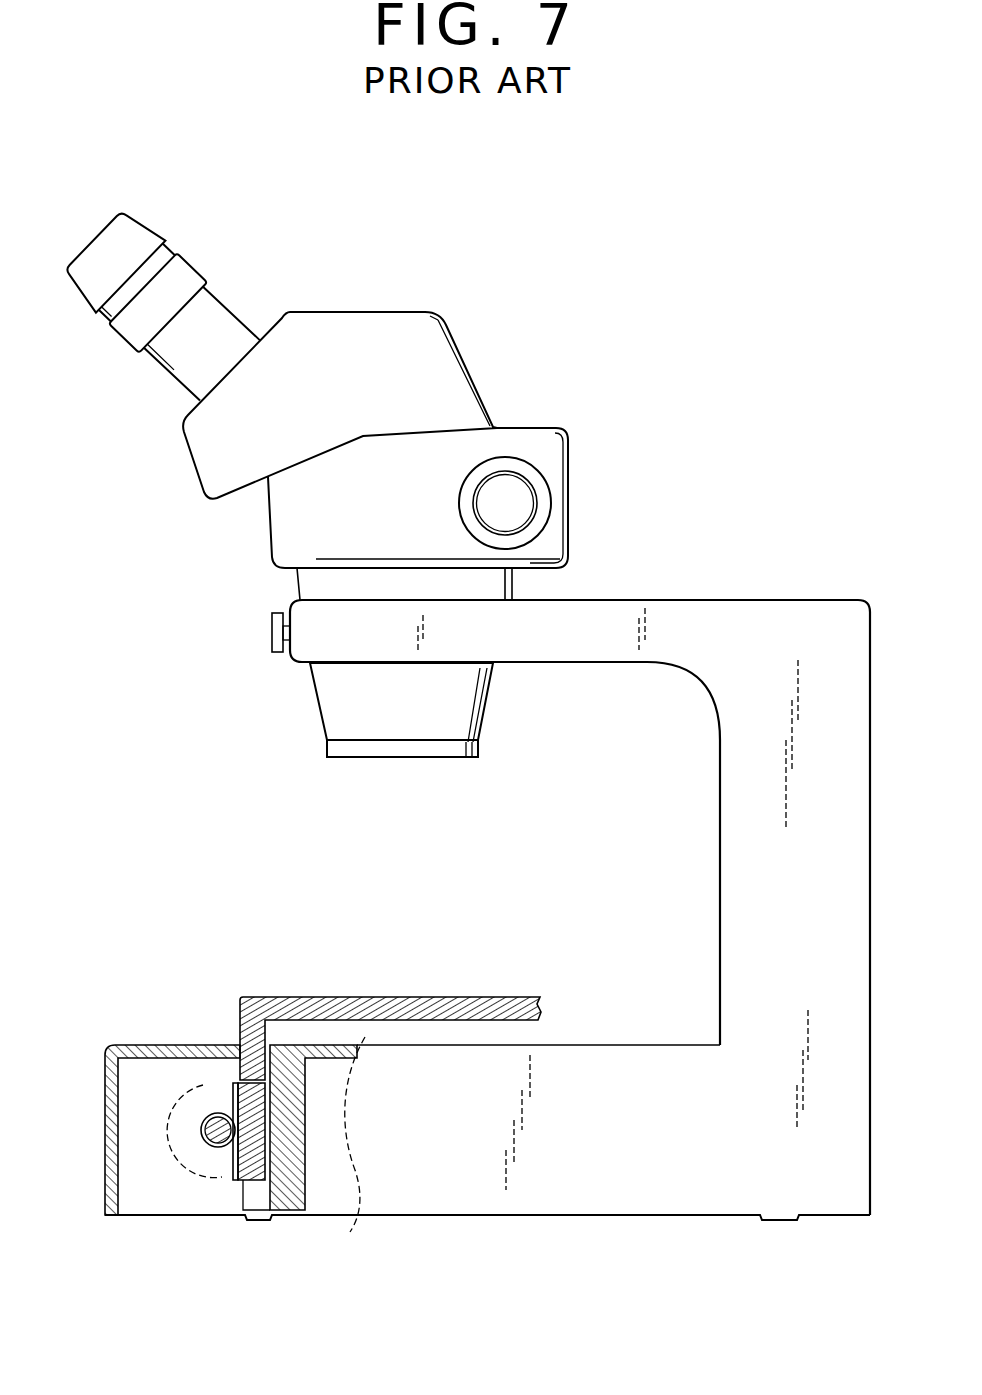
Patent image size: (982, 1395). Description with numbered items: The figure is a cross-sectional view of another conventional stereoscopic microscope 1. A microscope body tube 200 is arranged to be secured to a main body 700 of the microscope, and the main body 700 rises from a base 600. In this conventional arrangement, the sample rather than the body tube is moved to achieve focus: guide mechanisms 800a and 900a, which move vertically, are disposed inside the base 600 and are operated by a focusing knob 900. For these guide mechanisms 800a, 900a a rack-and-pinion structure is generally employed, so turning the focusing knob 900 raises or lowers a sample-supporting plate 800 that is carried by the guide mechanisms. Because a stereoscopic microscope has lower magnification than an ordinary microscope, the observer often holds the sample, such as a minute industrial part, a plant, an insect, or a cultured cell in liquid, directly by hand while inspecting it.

The microscope body 1 is at (288, 520).
The microscope body tube 200 is at (541, 455).
The base 600 is at (592, 1044).
The main body 700 is at (743, 627).
The stage plate 800 is at (468, 1005).
The guide mechanism 800a is at (220, 1093).
The focusing knob 900 is at (188, 1150).
The guide mechanism 900a is at (222, 1147).